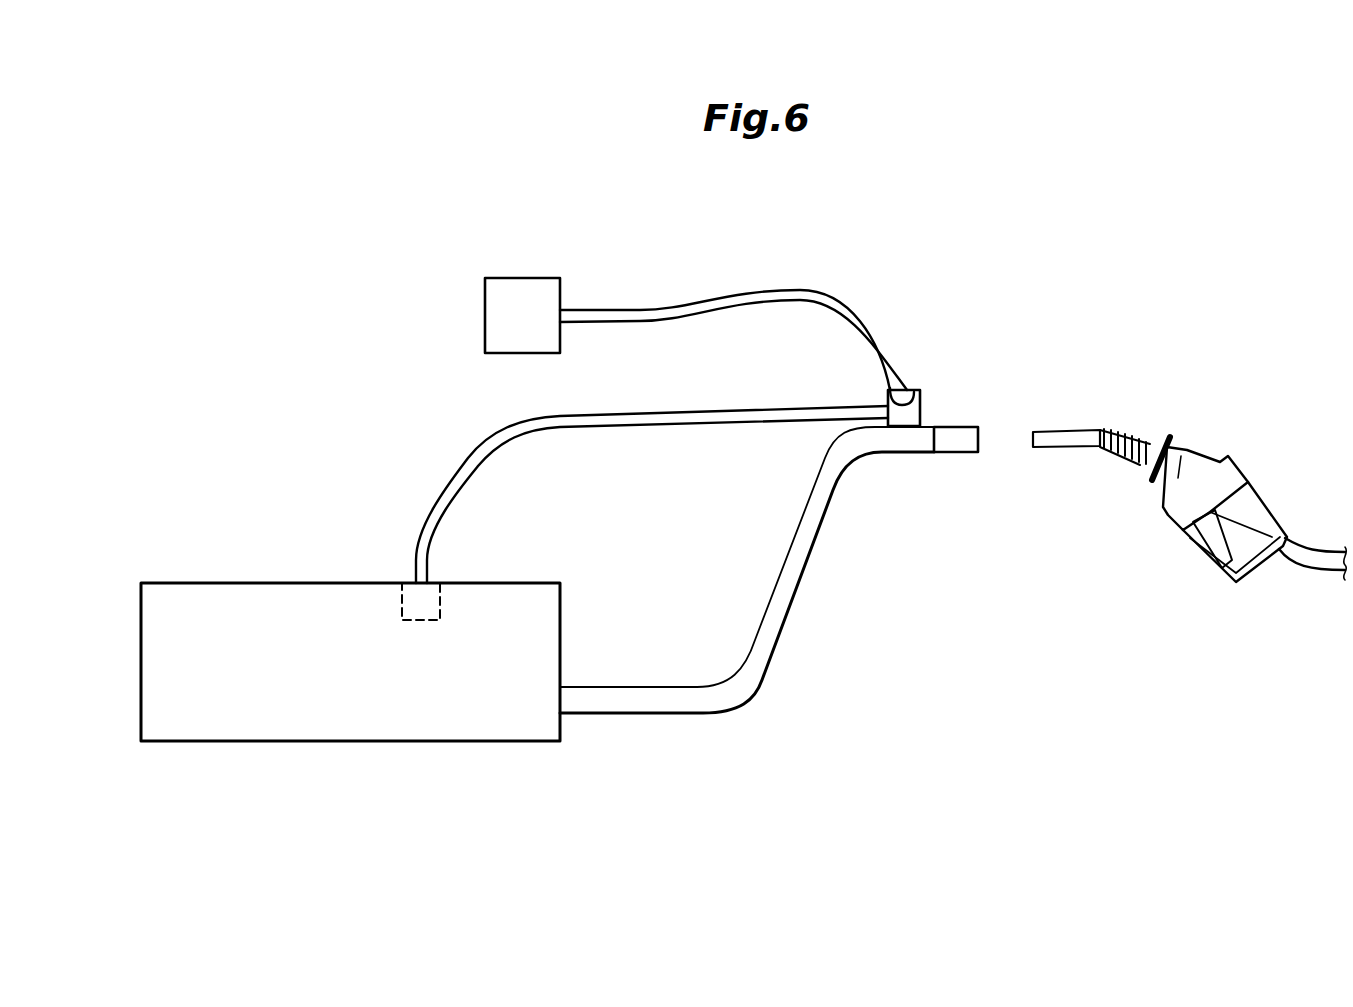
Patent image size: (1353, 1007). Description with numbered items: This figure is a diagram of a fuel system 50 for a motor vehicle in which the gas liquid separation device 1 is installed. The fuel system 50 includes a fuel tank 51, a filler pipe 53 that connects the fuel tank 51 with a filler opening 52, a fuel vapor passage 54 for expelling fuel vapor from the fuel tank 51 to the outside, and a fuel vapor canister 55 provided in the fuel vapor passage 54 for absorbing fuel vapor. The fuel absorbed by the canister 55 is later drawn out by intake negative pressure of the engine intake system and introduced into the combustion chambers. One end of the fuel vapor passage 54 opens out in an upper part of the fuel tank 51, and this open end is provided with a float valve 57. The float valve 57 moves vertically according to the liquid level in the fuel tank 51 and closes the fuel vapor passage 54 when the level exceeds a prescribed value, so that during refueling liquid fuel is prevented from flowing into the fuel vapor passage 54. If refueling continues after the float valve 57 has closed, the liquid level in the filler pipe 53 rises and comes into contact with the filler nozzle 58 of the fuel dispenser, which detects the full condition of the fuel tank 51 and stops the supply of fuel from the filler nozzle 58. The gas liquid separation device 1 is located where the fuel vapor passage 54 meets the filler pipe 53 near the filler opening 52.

The gas liquid separation device 1 is at (928, 376).
The fuel system 50 is at (907, 233).
The fuel tank 51 is at (443, 731).
The filler opening 52 is at (955, 448).
The filler pipe 53 is at (790, 594).
The fuel vapor passage 54 is at (663, 318).
The fuel vapor canister 55 is at (527, 290).
The float valve 57 is at (403, 600).
The filler nozzle 58 is at (1063, 440).